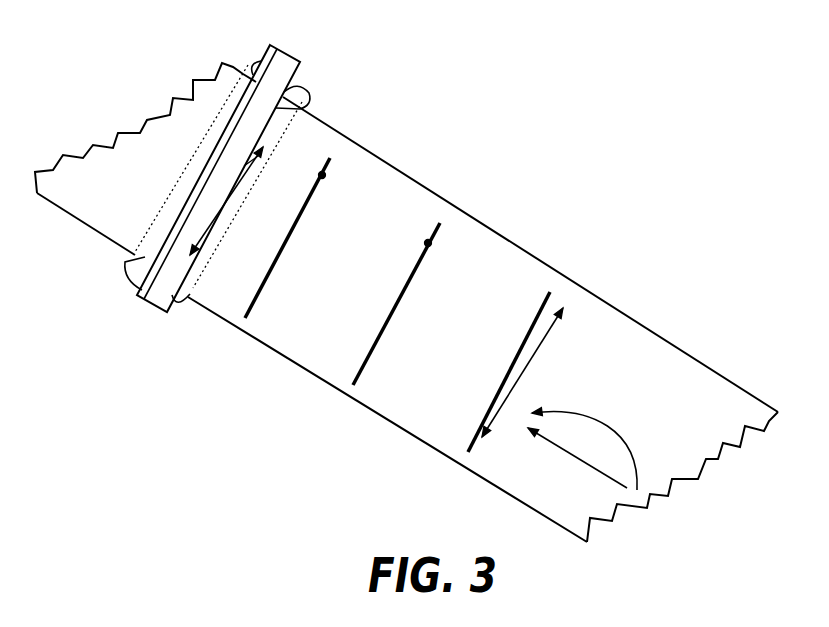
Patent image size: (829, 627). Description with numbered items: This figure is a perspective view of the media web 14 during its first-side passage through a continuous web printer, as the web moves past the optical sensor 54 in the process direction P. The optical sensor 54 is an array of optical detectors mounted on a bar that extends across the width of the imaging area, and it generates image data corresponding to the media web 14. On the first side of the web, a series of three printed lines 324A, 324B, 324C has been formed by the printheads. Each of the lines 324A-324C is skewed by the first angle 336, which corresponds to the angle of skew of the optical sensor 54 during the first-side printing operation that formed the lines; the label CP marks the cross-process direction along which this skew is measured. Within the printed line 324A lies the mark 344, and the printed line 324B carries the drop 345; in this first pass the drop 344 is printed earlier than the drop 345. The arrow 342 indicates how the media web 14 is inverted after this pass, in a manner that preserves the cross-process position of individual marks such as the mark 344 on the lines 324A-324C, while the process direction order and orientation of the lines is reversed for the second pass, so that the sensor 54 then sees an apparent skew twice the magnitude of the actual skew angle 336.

The media web 14 is at (330, 128).
The optical sensor 54 is at (293, 61).
The first angle 336 is at (264, 147).
The printed line 324A is at (296, 224).
The printed line 324B is at (398, 302).
The printed line 324C is at (512, 367).
The mark 344 is at (324, 174).
The drop 345 is at (432, 242).
The arrow 342 is at (606, 421).
The cutting path CP is at (228, 200).
The process direction P is at (578, 463).